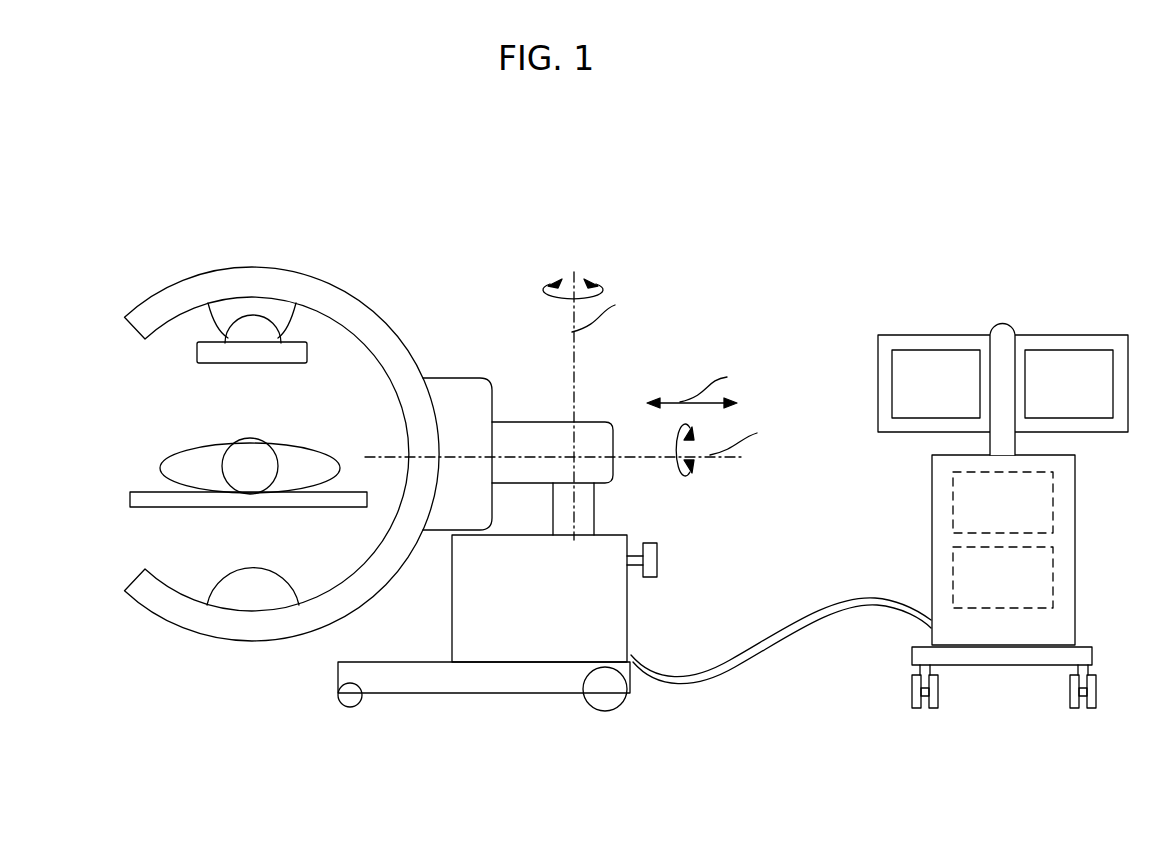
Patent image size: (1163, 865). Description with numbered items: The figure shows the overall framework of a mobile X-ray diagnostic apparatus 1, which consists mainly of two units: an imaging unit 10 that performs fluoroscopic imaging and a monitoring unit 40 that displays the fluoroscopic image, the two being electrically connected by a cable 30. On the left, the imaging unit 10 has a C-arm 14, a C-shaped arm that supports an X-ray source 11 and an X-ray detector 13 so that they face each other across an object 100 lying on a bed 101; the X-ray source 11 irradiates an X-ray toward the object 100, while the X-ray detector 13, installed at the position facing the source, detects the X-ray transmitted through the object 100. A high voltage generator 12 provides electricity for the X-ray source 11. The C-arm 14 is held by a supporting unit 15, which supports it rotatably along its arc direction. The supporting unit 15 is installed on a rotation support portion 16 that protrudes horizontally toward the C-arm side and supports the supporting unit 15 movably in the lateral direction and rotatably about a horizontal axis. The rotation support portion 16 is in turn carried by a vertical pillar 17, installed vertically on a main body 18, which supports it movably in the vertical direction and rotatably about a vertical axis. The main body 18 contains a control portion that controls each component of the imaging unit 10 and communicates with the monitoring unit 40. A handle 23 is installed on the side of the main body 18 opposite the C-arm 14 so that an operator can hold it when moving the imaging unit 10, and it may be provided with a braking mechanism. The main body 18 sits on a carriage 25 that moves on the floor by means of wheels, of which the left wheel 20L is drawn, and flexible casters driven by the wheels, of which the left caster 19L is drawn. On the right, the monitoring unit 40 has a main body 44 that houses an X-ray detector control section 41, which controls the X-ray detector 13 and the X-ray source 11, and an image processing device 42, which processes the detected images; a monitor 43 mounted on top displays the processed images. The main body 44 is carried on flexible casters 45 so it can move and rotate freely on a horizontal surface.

The mobile X-ray diagnostic apparatus 1 is at (768, 236).
The imaging unit 10 is at (547, 683).
The X-ray source 11 is at (273, 568).
The high voltage generator 12 is at (247, 603).
The X-ray detector 13 is at (200, 364).
The C-arm 14 is at (368, 306).
The supporting unit 15 is at (463, 385).
The rotation support portion 16 is at (595, 422).
The vertical pillar 17 is at (593, 512).
The main body 18 is at (492, 608).
The left caster 19L is at (350, 695).
The left wheel 20L is at (607, 695).
The handle 23 is at (660, 557).
The carriage 25 is at (407, 683).
The cable 30 is at (793, 632).
The monitoring unit 40 is at (990, 667).
The X-ray detector control section 41 is at (1038, 568).
The image processing device 42 is at (1053, 501).
The monitor 43 is at (1045, 352).
The main body 44 is at (1075, 618).
The flexible casters 45 is at (925, 708).
The object 100 is at (158, 464).
The bed 101 is at (128, 507).